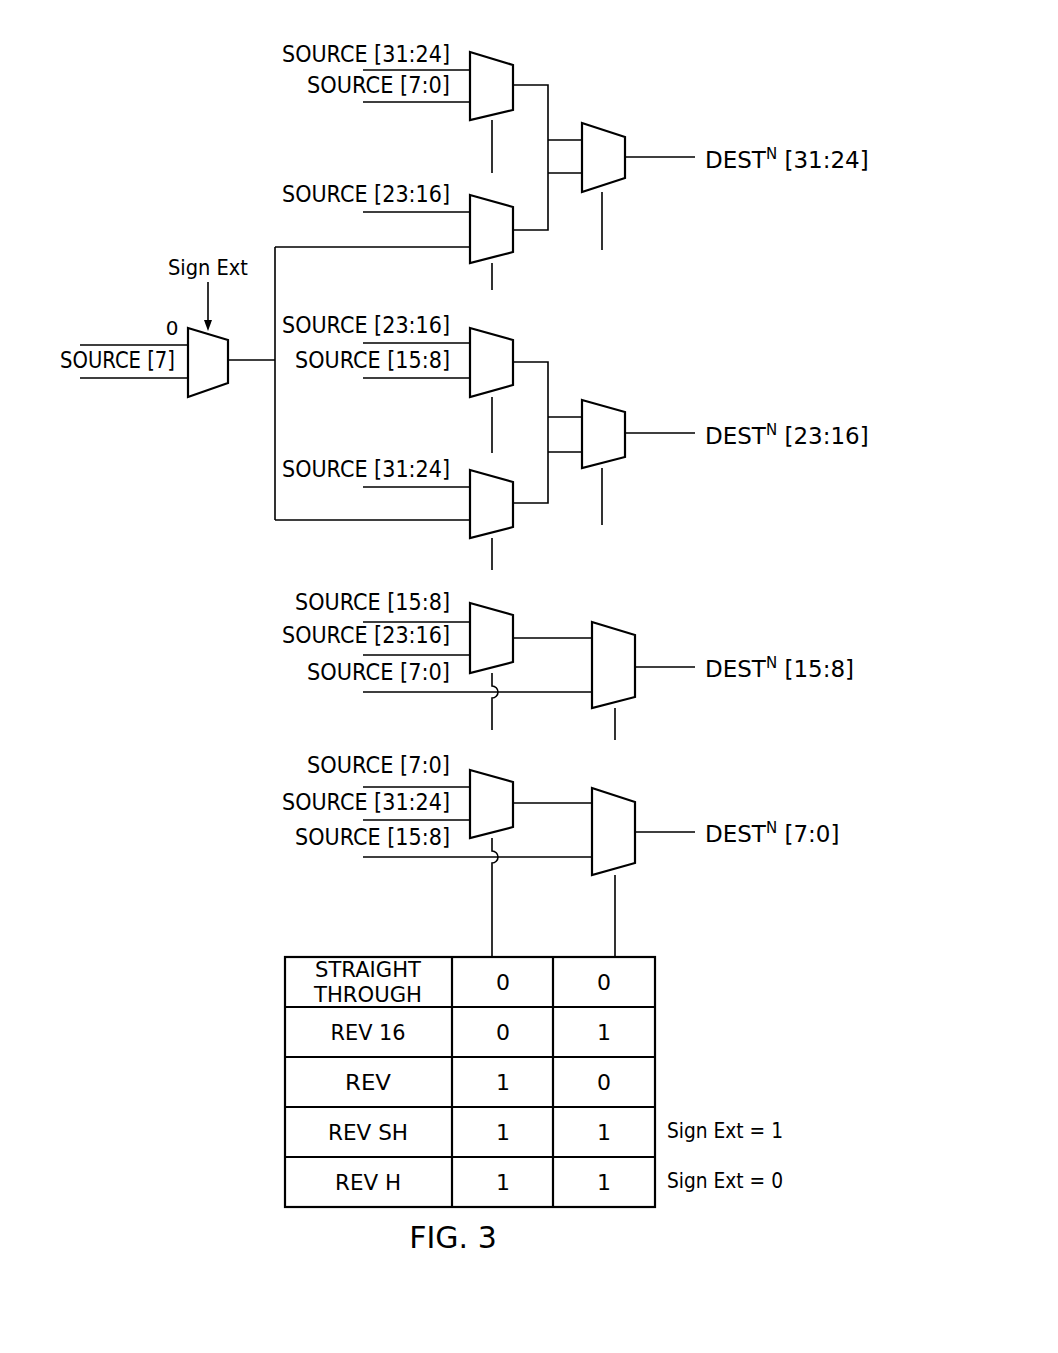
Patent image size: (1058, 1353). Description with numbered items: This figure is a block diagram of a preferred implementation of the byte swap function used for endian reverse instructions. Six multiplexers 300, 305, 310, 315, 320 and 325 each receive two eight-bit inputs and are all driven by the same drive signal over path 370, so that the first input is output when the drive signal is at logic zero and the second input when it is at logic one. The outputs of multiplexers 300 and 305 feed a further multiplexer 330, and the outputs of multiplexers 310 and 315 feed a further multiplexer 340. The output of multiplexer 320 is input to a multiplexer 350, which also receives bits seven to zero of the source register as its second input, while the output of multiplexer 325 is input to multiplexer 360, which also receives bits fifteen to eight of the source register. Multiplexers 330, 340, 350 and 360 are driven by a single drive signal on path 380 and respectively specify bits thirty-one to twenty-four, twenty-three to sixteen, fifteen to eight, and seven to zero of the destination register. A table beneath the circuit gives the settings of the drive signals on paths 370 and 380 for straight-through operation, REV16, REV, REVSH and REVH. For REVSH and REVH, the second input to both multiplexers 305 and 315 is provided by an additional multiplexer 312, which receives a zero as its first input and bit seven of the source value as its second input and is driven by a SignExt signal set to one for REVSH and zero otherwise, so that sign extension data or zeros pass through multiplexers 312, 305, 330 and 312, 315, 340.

The multiplexer 300 is at (490, 52).
The multiplexer 305 is at (492, 195).
The multiplexer 310 is at (492, 328).
The additional multiplexer 312 is at (209, 396).
The multiplexer 315 is at (492, 470).
The multiplexer 320 is at (492, 603).
The multiplexer 325 is at (492, 770).
The further multiplexer 330 is at (602, 123).
The further multiplexer 340 is at (602, 400).
The multiplexer 350 is at (612, 622).
The multiplexer 360 is at (612, 788).
The path 370 is at (492, 136).
The path 380 is at (602, 212).